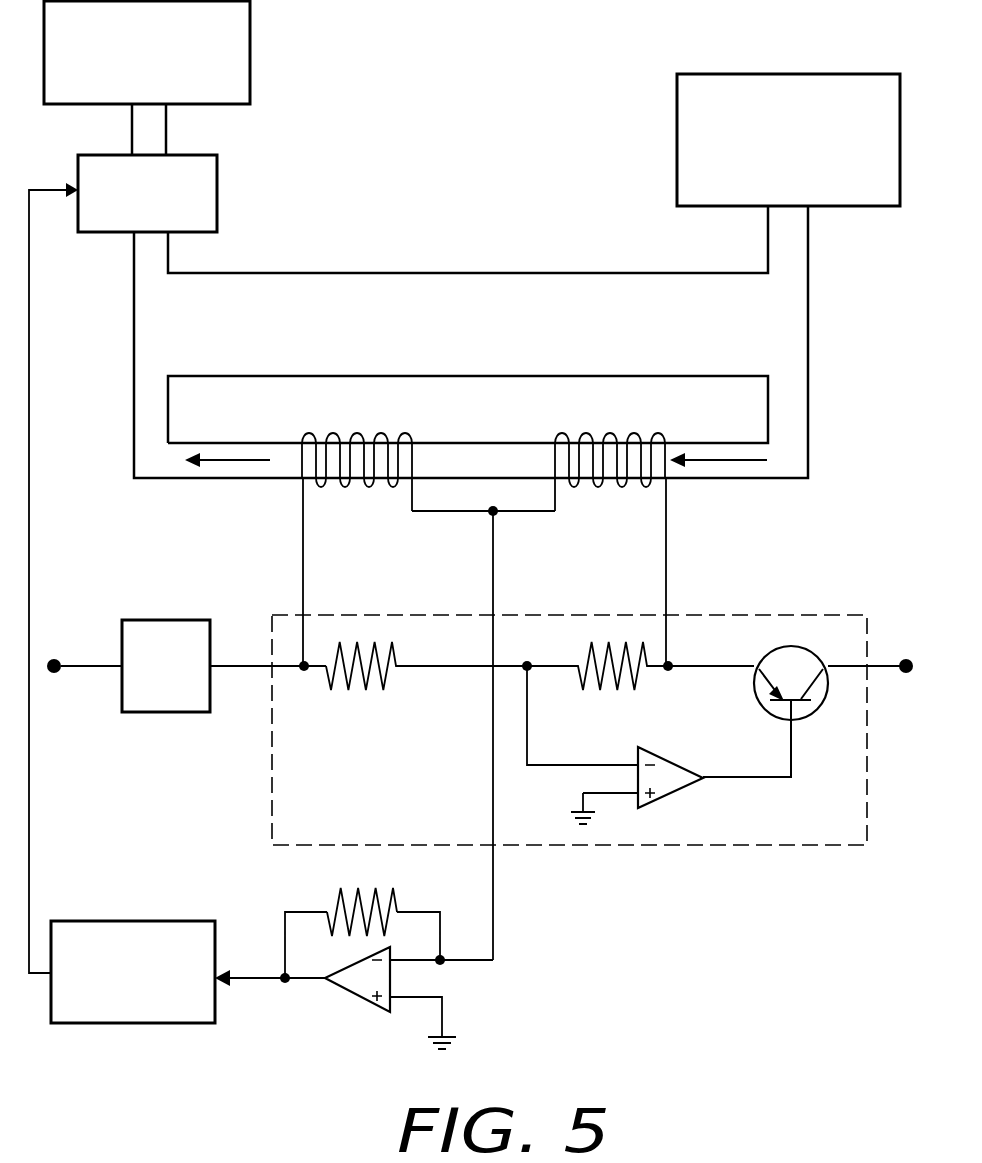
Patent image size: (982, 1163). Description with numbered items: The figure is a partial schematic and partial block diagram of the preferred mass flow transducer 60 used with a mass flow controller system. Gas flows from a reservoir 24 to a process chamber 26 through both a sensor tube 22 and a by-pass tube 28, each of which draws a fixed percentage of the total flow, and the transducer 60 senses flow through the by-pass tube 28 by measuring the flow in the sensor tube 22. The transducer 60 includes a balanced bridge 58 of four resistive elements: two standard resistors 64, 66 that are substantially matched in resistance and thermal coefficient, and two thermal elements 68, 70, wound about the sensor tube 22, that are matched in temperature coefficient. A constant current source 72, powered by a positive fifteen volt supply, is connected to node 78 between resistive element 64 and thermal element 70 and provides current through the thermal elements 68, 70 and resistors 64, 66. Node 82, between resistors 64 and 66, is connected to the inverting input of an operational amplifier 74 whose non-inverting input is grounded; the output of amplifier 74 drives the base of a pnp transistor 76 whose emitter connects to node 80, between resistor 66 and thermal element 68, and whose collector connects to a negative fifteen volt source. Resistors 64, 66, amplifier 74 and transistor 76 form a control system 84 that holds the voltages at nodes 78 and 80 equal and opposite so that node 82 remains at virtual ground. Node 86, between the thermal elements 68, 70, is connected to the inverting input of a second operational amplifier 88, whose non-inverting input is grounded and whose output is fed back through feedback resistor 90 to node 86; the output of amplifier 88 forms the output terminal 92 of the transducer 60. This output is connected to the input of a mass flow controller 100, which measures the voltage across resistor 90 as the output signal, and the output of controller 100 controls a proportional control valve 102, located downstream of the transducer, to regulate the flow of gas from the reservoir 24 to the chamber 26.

The sensor tube 22 is at (474, 470).
The reservoir 24 is at (802, 163).
The process chamber 26 is at (133, 78).
The by-pass tube 28 is at (459, 331).
The balanced bridge 58 is at (441, 580).
The transducer 60 is at (461, 216).
The resistive element 64 is at (397, 658).
The resistive element 66 is at (582, 688).
The thermal element 68 is at (651, 488).
The thermal element 70 is at (394, 488).
The constant current source 72 is at (181, 680).
The operational amplifier 74 is at (670, 758).
The pnp transistor 76 is at (813, 656).
The node 78 is at (304, 673).
The node 80 is at (675, 661).
The node 82 is at (528, 658).
The control system 84 is at (772, 829).
The node 86 is at (499, 515).
The operational amplifier 88 is at (359, 1000).
The feedback resistor 90 is at (398, 900).
The output terminal 92 is at (258, 980).
The mass flow controller 100 is at (117, 998).
The proportional control valve 102 is at (166, 220).